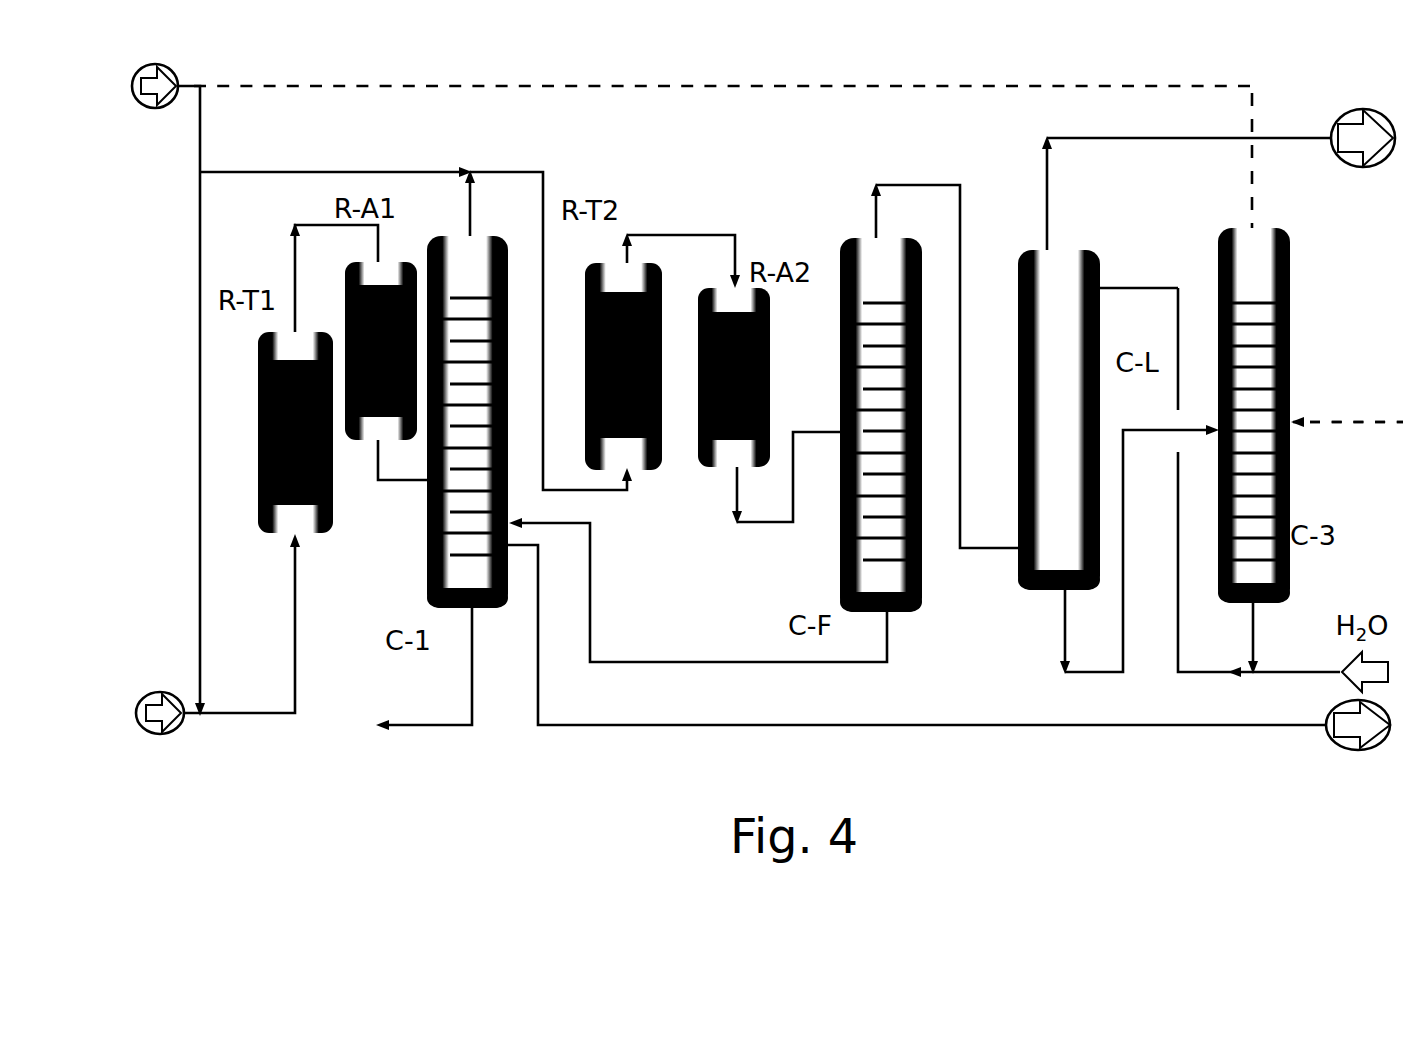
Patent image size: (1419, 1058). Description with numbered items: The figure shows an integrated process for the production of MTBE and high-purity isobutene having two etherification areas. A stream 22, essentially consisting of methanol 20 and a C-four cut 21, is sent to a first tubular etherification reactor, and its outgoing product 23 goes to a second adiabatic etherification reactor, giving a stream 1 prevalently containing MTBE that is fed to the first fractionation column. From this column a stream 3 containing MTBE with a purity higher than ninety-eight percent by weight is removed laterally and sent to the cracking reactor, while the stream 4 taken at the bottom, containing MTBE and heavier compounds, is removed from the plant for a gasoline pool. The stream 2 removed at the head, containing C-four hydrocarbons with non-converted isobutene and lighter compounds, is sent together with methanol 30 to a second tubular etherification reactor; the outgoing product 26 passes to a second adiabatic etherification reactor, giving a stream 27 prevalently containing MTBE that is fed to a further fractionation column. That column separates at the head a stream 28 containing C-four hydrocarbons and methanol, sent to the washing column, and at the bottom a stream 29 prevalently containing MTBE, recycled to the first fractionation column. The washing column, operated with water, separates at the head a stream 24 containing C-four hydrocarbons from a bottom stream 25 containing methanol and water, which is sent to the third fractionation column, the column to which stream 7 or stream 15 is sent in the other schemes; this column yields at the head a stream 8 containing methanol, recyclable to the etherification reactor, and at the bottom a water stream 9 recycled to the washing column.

The stream prevalently containing MTBE 1 is at (402, 485).
The stream removed at the head of the fractionation column 2 is at (548, 330).
The stream removed laterally from the fractionation column 3 is at (949, 660).
The stream taken at the bottom of the fractionation column 4 is at (420, 690).
The stream sent to the fractionation column C-3 7 is at (1347, 405).
The stream containing methanol 8 is at (717, 137).
The stream to column C-L 9 is at (1220, 502).
The stream sent to the fractionation column C-3 15 is at (1357, 402).
The methanol 20 is at (167, 390).
The C4 cut 21 is at (159, 691).
The stream essentially consisting of methanol and a C4 cut 22 is at (242, 652).
The outgoing product 23 is at (327, 261).
The stream containing C4 hydrocarbons 24 is at (1218, 156).
The stream containing methanol and water 25 is at (1129, 570).
The outgoing product 26 is at (681, 244).
The stream prevalently containing MTBE 27 is at (778, 505).
The stream containing C4 hydrocarbons and methanol 28 is at (944, 346).
The stream prevalently containing MTBE 29 is at (698, 611).
The methanol 30 is at (336, 155).